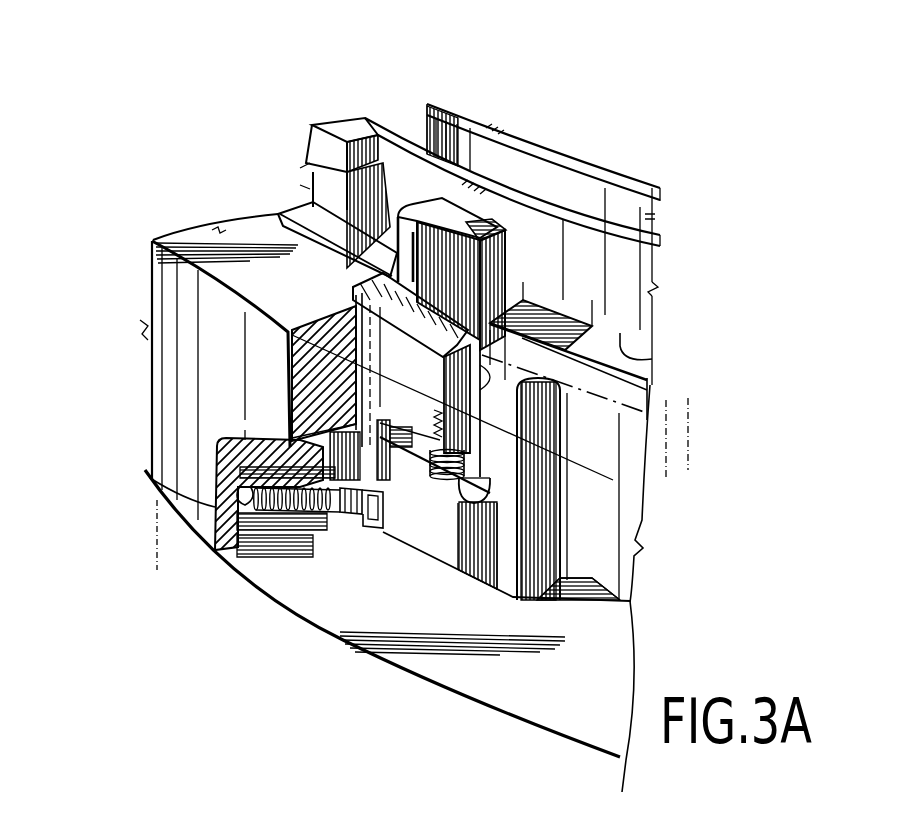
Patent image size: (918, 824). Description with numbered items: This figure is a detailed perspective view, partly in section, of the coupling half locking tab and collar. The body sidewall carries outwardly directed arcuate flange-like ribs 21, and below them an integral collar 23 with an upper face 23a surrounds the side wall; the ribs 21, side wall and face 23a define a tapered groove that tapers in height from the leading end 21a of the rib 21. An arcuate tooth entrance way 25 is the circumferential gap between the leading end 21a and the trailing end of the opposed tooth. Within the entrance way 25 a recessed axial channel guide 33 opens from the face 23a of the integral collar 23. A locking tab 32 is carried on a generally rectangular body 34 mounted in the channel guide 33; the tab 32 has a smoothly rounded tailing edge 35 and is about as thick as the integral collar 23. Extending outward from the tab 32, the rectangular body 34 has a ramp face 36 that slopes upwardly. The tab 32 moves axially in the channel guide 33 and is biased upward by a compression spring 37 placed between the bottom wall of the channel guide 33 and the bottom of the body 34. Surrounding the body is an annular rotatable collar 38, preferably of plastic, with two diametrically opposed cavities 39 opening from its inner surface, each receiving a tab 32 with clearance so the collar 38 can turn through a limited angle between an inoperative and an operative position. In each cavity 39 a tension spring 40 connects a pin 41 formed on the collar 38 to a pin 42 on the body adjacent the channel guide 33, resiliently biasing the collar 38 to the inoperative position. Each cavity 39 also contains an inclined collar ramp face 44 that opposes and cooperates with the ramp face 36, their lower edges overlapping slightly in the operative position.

The arcuate flange-like rib 21 is at (345, 133).
The leading end of rib 21a is at (326, 178).
The integral collar 23 is at (597, 313).
The upper face of integral collar 23a is at (652, 361).
The arcuate tooth entrance way 25 is at (585, 245).
The locking tab 32 is at (478, 212).
The recessed axial channel guide 33 is at (455, 502).
The rectangular body 34 is at (488, 225).
The rounded tailing edge 35 is at (406, 195).
The ramp face 36 is at (280, 216).
The compression spring 37 is at (320, 512).
The rotatable collar 38 is at (183, 348).
The cavity 39 is at (552, 602).
The tension spring 40 is at (207, 553).
The pin on collar 41 is at (213, 507).
The pin on body 42 is at (373, 500).
The inclined collar ramp face 44 is at (580, 428).